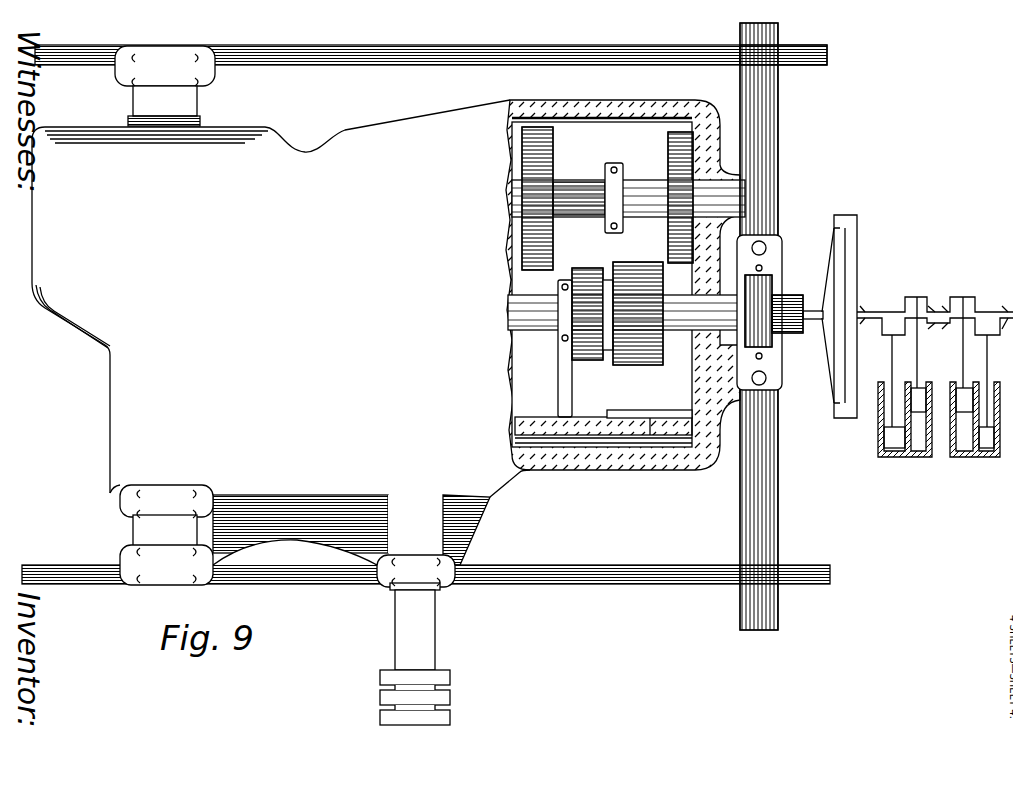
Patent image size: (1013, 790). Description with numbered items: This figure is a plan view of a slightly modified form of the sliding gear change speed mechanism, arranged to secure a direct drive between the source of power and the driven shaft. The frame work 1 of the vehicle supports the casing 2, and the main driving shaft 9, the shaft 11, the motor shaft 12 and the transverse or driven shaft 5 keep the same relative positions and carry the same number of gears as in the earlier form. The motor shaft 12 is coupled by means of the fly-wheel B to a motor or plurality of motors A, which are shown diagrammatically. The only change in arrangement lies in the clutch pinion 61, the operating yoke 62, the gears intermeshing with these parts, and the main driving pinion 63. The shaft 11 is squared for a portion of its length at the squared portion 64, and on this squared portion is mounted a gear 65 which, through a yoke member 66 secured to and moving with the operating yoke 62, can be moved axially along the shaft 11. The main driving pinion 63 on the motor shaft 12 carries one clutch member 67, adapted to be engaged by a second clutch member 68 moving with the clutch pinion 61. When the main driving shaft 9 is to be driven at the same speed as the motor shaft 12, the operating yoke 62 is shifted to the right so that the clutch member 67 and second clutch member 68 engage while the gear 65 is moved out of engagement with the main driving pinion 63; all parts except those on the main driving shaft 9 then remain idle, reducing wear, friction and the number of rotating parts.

The frame work 1 is at (742, 522).
The casing 2 is at (512, 500).
The transverse or driven shaft 5 is at (156, 576).
The main driving shaft 9 is at (535, 330).
The shaft 11 is at (569, 182).
The motor shaft 12 is at (792, 300).
The clutch pinion 61 is at (577, 418).
The operating yoke 62 is at (560, 368).
The main driving pinion 63 is at (655, 368).
The squared portion 64 is at (588, 188).
The gear 65 is at (694, 125).
The yoke member 66 is at (610, 241).
The clutch member 67 is at (608, 332).
The second clutch member 68 is at (600, 300).
The motor A is at (935, 393).
The fly-wheel B is at (858, 262).